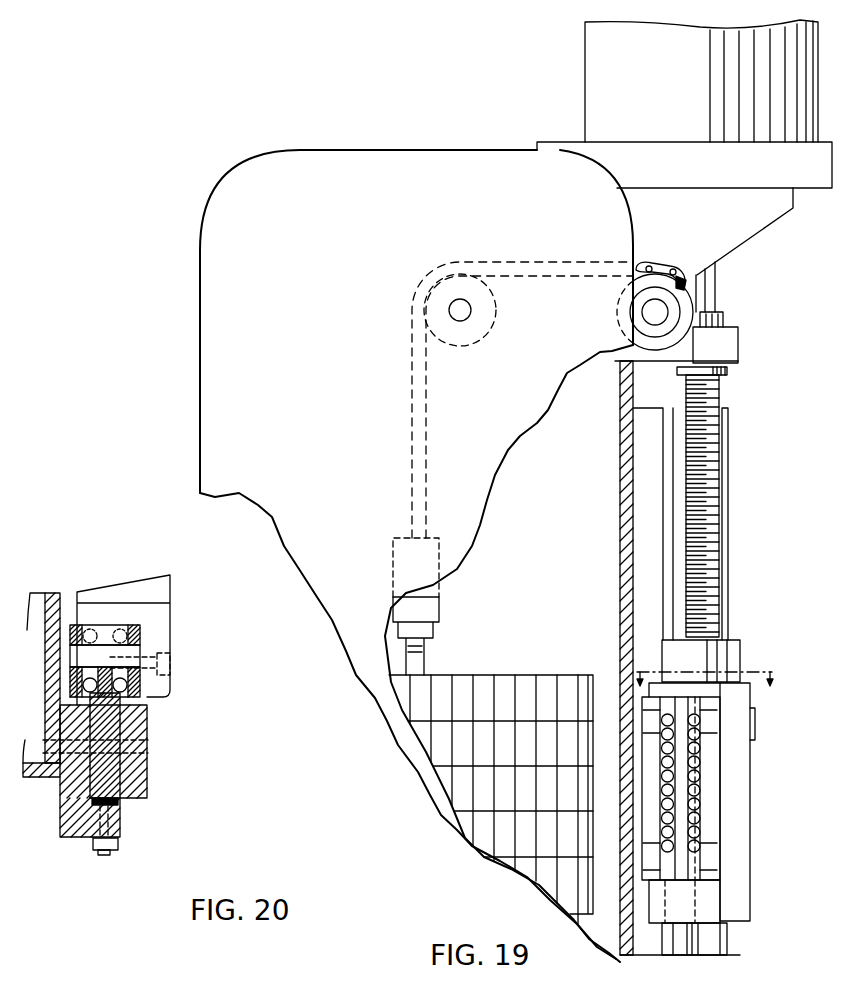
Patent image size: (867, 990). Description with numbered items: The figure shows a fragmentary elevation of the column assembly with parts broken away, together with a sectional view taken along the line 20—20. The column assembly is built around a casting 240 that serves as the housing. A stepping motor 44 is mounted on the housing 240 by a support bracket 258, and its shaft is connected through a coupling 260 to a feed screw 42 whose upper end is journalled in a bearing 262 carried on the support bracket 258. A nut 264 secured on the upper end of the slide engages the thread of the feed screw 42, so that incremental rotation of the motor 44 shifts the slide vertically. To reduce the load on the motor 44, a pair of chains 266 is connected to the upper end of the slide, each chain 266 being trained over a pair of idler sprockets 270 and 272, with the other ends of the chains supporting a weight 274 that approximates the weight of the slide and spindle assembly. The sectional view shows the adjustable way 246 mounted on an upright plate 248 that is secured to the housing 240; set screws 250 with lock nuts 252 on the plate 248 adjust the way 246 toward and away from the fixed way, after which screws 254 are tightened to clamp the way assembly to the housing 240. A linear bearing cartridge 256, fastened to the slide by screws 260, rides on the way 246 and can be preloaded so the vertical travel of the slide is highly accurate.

In FIG. 19, the casting 240 is at (205, 348).
In FIG. 20, the casting 240 is at (60, 595).
In FIG. 19, the motor 44 is at (595, 62).
In FIG. 19, the support bracket 258 is at (808, 183).
In FIG. 19, the chains 266 is at (648, 264).
In FIG. 19, the idler sprocket 272 is at (497, 322).
In FIG. 19, the idler sprocket 270 is at (655, 347).
In FIG. 19, the bearing 262 is at (736, 370).
In FIG. 19, the feed screw 42 is at (705, 547).
In FIG. 19, the nut 264 is at (732, 645).
In FIG. 19, the section line 20- 20 is at (720, 666).
In FIG. 19, the linear bearing cartridges 256 is at (713, 773).
In FIG. 20, the linear bearing cartridges 256 is at (136, 645).
In FIG. 19, the weight 274 is at (498, 675).
In FIG. 20, the upright plate 248 is at (70, 838).
In FIG. 20, the screws 260 is at (172, 658).
In FIG. 20, the way 246 is at (148, 787).
In FIG. 20, the screws 254 is at (150, 740).
In FIG. 20, the lock nuts 252 is at (120, 846).
In FIG. 20, the set screws 250 is at (105, 856).